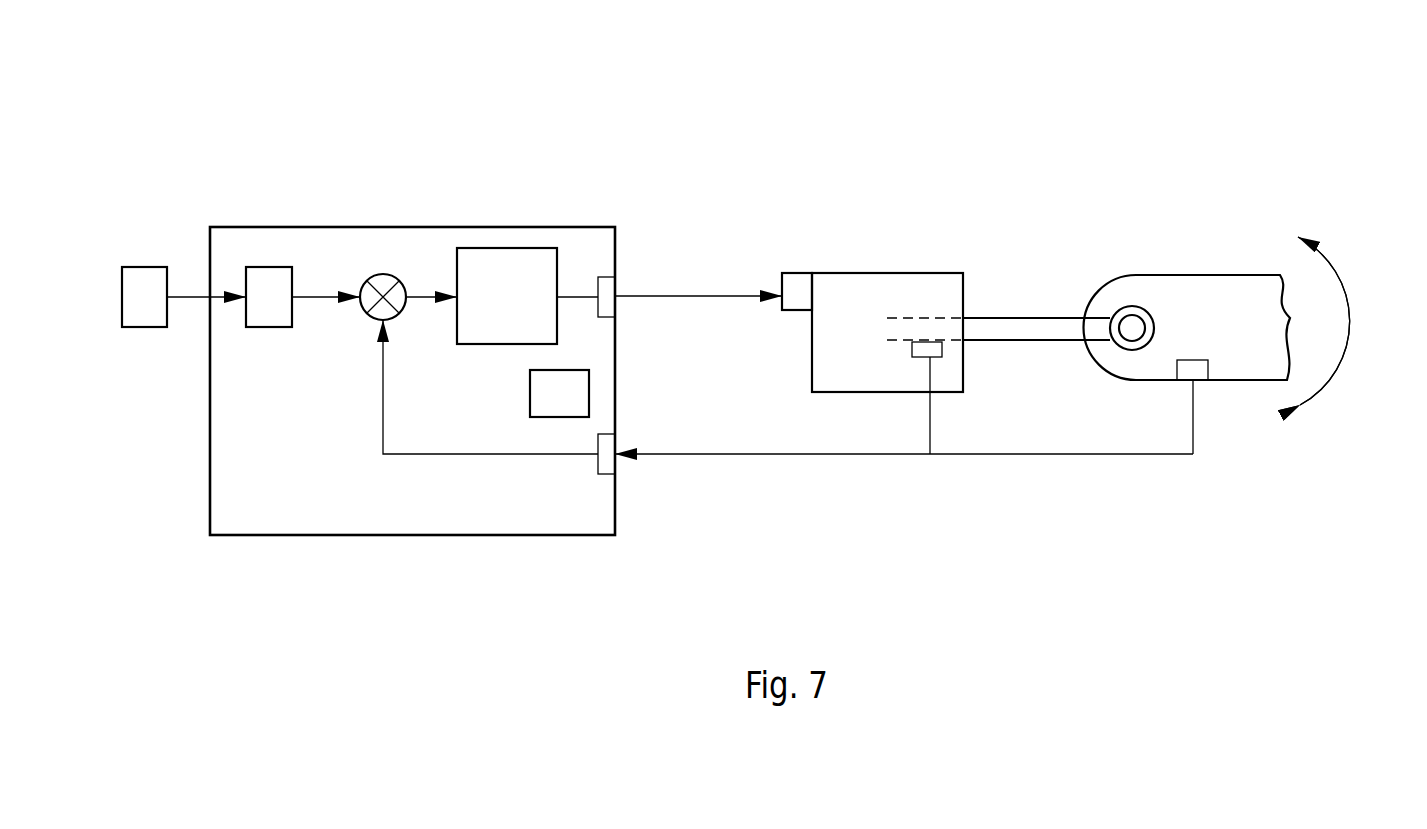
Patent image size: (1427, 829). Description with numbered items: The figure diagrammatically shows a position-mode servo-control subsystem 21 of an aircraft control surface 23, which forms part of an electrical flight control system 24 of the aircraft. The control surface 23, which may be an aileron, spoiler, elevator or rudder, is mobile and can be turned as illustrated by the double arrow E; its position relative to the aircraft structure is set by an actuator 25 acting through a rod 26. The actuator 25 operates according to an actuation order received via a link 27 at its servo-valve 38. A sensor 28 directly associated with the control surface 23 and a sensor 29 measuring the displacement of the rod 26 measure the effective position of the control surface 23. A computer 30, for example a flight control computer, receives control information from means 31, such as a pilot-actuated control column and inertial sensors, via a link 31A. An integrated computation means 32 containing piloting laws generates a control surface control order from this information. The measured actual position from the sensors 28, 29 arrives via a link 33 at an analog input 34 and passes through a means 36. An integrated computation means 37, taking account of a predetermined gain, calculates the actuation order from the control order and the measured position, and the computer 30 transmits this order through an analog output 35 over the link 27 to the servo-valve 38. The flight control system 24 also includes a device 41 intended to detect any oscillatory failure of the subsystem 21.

The position-mode servo-control subsystem 21 is at (338, 590).
The control surface 23 is at (1253, 380).
The electrical flight control system 24 is at (772, 188).
The actuator 25 is at (832, 392).
The rod 26 is at (1022, 318).
The link 27 is at (705, 295).
The sensor 28 is at (1183, 380).
The sensor 29 is at (938, 350).
The computer 30 is at (497, 535).
The means for generating control information 31 is at (146, 327).
The link 31A is at (192, 295).
The integrated computation means 32 is at (270, 327).
The link 33 is at (832, 454).
The input 34 is at (612, 463).
The output 35 is at (612, 300).
The means 36 is at (370, 318).
The integrated computation means 37 is at (478, 344).
The servo-valve 38 is at (797, 276).
The device 41 is at (589, 390).
The double arrow E is at (1338, 318).